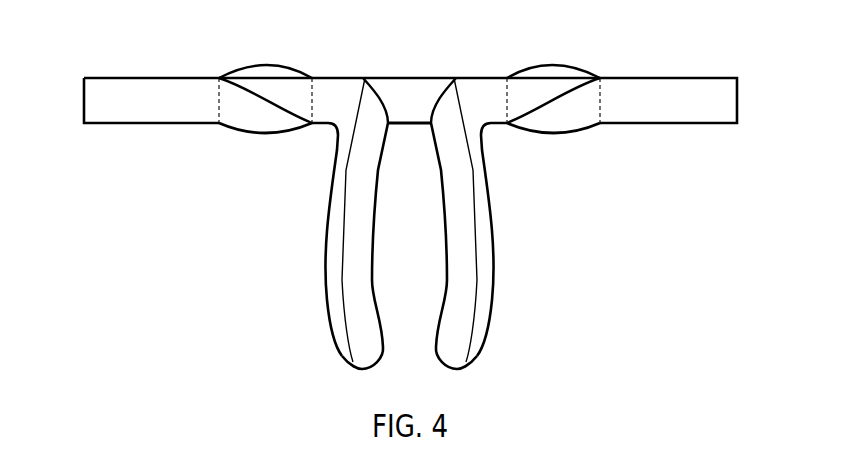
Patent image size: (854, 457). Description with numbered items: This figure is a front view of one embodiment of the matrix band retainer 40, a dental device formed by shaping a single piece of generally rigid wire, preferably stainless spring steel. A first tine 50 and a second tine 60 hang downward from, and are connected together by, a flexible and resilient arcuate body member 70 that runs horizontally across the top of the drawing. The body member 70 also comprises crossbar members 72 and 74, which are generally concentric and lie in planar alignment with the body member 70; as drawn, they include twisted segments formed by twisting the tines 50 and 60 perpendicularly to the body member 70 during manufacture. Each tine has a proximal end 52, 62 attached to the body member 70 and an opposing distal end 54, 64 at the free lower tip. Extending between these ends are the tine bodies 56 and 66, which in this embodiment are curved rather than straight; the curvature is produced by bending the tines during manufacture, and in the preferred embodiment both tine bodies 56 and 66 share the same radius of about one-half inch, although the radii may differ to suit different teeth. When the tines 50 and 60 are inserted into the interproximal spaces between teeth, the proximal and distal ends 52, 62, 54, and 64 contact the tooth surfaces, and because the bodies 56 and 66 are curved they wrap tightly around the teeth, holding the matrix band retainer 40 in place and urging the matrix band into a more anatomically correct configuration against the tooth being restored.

The matrix band retainer 40 is at (235, 172).
The body member 70 is at (93, 97).
The crossbar member 72 is at (274, 61).
The crossbar member 74 is at (543, 61).
The proximal end 52 is at (383, 98).
The proximal end 62 is at (434, 98).
The first tine 50 is at (333, 208).
The second tine 60 is at (487, 212).
The body 56 is at (324, 257).
The body 66 is at (499, 255).
The distal end 54 is at (387, 356).
The distal end 64 is at (422, 357).